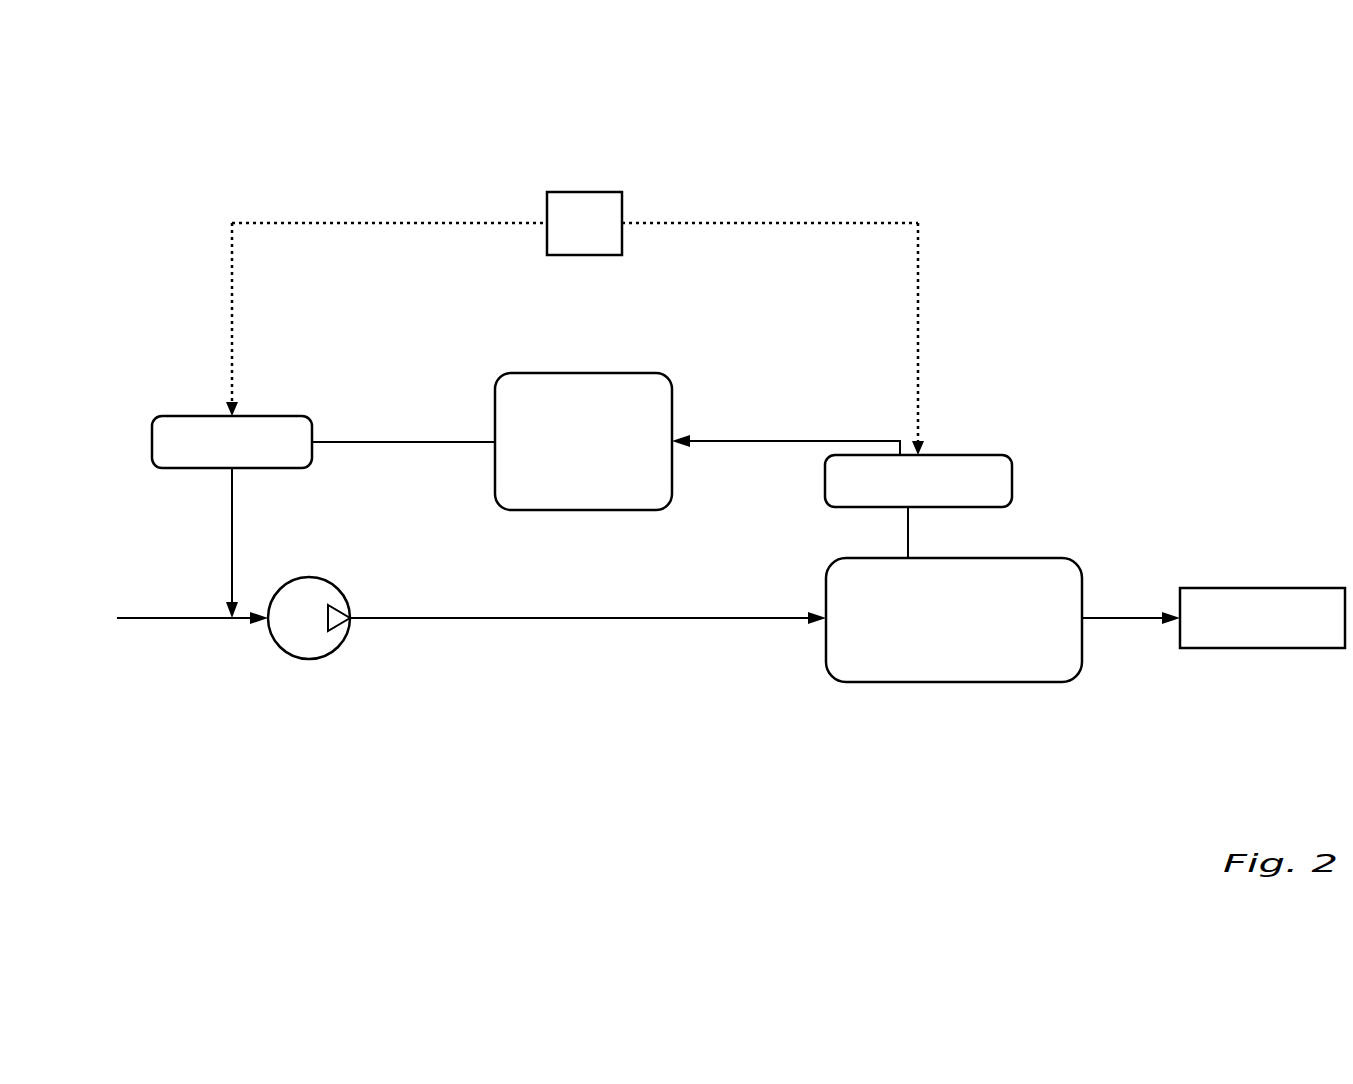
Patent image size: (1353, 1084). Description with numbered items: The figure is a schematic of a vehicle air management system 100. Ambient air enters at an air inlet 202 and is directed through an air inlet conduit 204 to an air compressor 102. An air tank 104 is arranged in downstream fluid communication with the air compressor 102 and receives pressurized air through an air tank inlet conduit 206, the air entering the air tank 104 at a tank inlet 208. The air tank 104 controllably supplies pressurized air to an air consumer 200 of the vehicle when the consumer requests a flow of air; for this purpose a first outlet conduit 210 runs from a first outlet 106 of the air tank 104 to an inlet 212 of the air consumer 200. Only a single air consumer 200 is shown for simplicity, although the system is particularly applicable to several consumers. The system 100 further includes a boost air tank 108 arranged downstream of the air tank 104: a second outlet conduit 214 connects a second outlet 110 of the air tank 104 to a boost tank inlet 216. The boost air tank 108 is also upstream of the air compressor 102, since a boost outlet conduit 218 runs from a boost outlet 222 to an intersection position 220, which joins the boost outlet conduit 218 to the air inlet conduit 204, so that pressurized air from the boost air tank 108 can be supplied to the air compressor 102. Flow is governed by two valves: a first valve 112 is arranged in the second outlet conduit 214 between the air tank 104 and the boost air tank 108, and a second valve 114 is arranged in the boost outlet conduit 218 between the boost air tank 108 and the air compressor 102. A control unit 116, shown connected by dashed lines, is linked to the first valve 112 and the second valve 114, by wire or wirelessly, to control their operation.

The vehicle air management system 100 is at (1000, 250).
The air compressor 102 is at (313, 660).
The air tank 104 is at (963, 682).
The first outlet 106 is at (1083, 622).
The boost air tank 108 is at (640, 373).
The second outlet 110 is at (910, 557).
The first valve 112 is at (957, 455).
The second valve 114 is at (192, 415).
The control unit 116 is at (583, 192).
The air consumer 200 is at (1258, 650).
The air inlet 202 is at (118, 620).
The air inlet conduit 204 is at (180, 622).
The air tank inlet conduit 206 is at (523, 622).
The tank inlet 208 is at (826, 622).
The first outlet conduit 210 is at (1130, 617).
The inlet of the air consumer 212 is at (1180, 617).
The second outlet conduit 214 is at (807, 440).
The boost tank inlet 216 is at (675, 440).
The boost outlet conduit 218 is at (348, 442).
The intersection position 220 is at (240, 613).
The boost outlet 222 is at (493, 440).